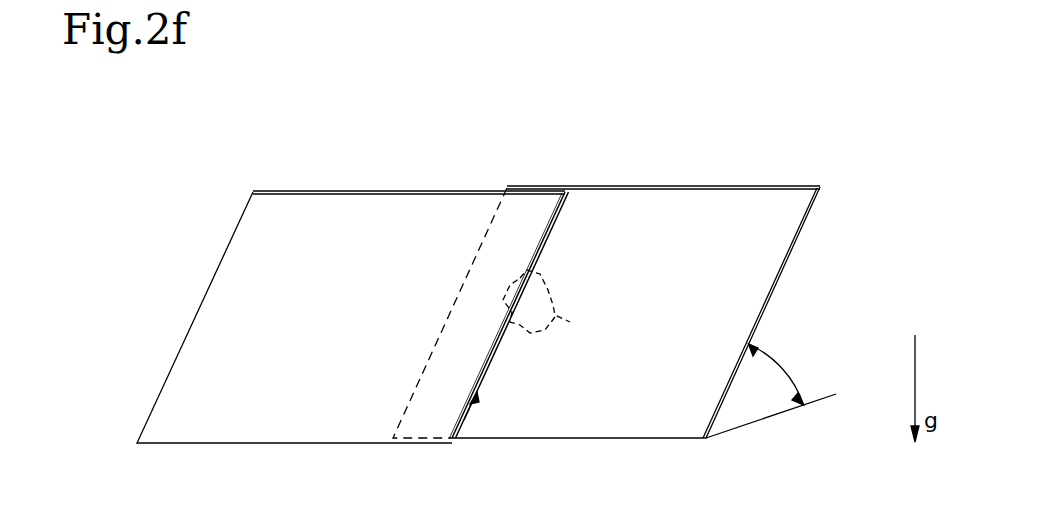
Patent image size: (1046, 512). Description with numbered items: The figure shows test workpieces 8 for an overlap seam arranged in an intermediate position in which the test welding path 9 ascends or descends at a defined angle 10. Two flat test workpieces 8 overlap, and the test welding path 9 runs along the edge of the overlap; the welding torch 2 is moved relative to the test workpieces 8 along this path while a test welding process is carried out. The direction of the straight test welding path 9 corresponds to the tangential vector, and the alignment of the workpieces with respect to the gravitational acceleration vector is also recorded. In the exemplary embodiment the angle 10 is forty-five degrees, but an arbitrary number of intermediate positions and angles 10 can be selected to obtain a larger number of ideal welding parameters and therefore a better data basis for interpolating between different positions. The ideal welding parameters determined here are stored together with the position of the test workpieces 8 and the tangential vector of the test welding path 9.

The test workpiece 8 is at (287, 286).
The test welding path 9 is at (540, 247).
The welding torch 2 is at (536, 307).
The angle 10 is at (783, 364).